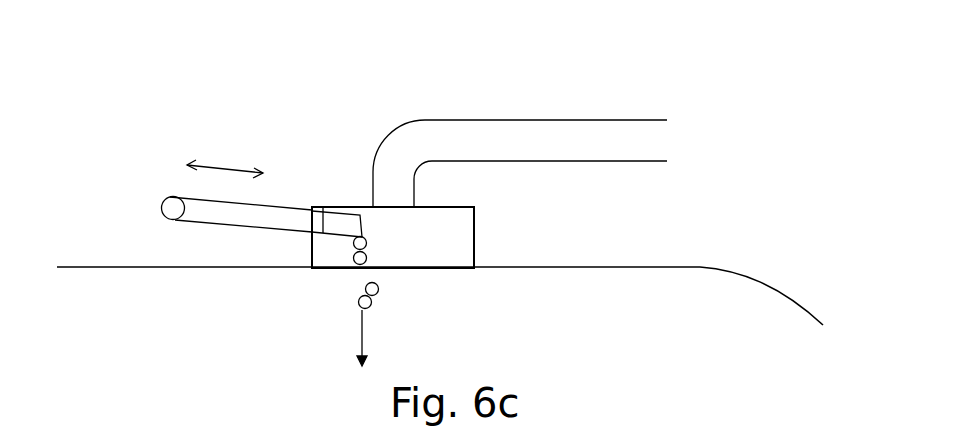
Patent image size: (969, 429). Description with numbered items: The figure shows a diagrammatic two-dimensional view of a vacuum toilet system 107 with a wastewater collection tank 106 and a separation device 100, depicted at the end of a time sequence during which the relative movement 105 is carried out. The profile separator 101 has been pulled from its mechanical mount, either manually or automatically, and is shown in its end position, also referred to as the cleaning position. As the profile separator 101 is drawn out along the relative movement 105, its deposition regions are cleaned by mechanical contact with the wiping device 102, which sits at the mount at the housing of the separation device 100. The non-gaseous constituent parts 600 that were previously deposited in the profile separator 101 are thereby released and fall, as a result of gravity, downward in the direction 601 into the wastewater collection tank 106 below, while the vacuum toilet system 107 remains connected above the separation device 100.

The separation device 100 is at (118, 173).
The profile separator 101 is at (287, 208).
The wiping device 102 is at (323, 207).
The relative movement 105 is at (232, 165).
The wastewater collection tank 106 is at (713, 268).
The vacuum toilet system 107 is at (618, 90).
The non-gaseous constituent parts 600 is at (357, 302).
The drop direction 601 is at (366, 350).